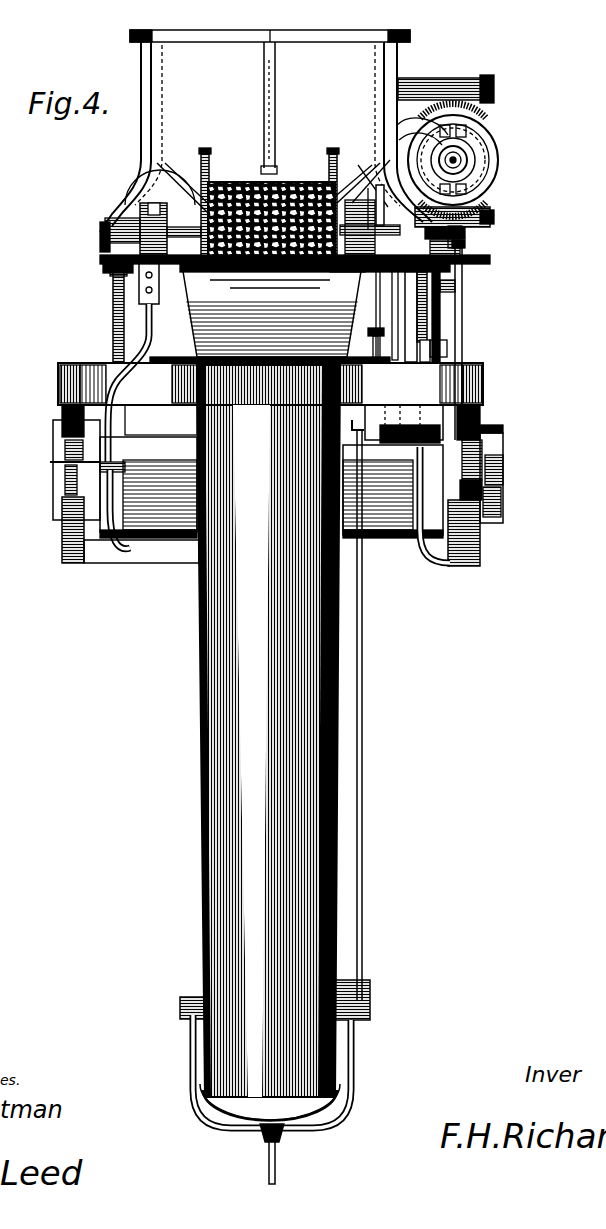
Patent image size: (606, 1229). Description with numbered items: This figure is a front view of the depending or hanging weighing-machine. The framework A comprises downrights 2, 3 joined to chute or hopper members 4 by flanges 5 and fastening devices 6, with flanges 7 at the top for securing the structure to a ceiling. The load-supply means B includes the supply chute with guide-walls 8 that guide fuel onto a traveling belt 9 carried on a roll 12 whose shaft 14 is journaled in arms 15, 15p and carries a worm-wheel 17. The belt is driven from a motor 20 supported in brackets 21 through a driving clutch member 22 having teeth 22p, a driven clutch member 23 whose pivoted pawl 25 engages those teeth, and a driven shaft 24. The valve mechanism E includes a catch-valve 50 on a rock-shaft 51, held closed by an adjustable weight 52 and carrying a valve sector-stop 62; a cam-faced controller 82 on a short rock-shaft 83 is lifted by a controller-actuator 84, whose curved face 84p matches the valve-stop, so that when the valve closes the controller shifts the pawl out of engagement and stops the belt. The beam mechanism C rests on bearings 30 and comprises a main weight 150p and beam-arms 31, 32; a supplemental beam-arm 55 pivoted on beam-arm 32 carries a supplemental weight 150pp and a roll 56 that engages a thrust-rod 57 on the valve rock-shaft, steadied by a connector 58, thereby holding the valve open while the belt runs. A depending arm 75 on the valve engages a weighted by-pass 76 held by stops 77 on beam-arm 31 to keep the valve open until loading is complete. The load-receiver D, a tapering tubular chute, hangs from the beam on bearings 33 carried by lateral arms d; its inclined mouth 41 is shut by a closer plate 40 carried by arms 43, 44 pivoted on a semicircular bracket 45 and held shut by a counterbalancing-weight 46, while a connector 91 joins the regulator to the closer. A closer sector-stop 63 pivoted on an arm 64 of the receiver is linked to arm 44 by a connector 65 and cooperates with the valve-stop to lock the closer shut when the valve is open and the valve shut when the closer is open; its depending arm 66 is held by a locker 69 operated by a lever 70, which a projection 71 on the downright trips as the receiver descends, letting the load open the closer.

The framework A is at (270, 25).
The flanges 7 is at (283, 30).
The chute or hopper members 4 is at (185, 108).
The flanges 5 is at (263, 74).
The fastening devices 6 is at (277, 130).
The guide-walls 8 is at (209, 165).
The belt 9 is at (201, 215).
The adjustable weight 52 is at (138, 212).
The roll 12 is at (370, 227).
The shaft 14 is at (289, 219).
The controller-actuator 84 is at (380, 185).
The curved face 84p is at (368, 190).
The brackets or arms 21 is at (420, 140).
The motor 20 is at (488, 104).
The pivoted pawl 25 is at (486, 116).
The driven shaft 24 is at (470, 150).
The driving clutch member 22 is at (495, 175).
The teeth 22p is at (478, 150).
The driven clutch member 23 is at (486, 164).
The short rock-shaft 83 is at (486, 208).
The cam-faced controller 82 is at (468, 240).
The arm 15p is at (112, 292).
The load-supply means B is at (87, 317).
The downright 3 is at (113, 338).
The depending arm 75 is at (148, 338).
The catch-valve 50 is at (192, 324).
The rock-shaft 51 is at (379, 315).
The valve sector-stop 62 is at (392, 312).
The closer sector-stop 63 is at (373, 338).
The valve mechanism E is at (349, 341).
The arm 15 is at (420, 292).
The downright 2 is at (428, 328).
The worm-wheel 17 is at (455, 292).
The thrust-rod 57 is at (462, 327).
The connector 58 is at (447, 352).
The arm 64 is at (404, 412).
The laterally-extending arms d is at (242, 420).
The lever 70 is at (448, 432).
The depending arm 66 is at (372, 420).
The beam mechanism C is at (275, 485).
The main weight 150p is at (178, 532).
The supplemental weight 150pp is at (488, 515).
The beam-arm 31 is at (65, 447).
The bearings 33 is at (510, 432).
The bearings 30 is at (65, 478).
The roll 56 is at (480, 432).
The supplemental beam-arm 55 is at (502, 470).
The beam-arm 32 is at (485, 480).
The weighted by-pass 76 is at (118, 460).
The stops 77 is at (118, 468).
The projection 71 is at (418, 535).
The locker 69 is at (362, 500).
The connector 65 is at (363, 606).
The load-receiver D is at (250, 731).
The inclined mouth 41 is at (240, 1125).
The semicircular bracket 45 is at (200, 997).
The counterbalancing-weight 46 is at (368, 1024).
The closer arm 44 is at (190, 1066).
The closer arm 43 is at (353, 1065).
The closer plate 40 is at (252, 1130).
The connector 91 is at (275, 1166).